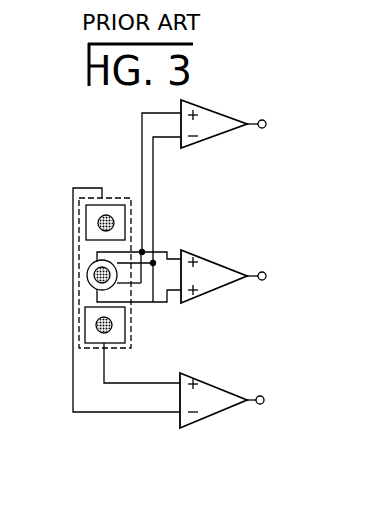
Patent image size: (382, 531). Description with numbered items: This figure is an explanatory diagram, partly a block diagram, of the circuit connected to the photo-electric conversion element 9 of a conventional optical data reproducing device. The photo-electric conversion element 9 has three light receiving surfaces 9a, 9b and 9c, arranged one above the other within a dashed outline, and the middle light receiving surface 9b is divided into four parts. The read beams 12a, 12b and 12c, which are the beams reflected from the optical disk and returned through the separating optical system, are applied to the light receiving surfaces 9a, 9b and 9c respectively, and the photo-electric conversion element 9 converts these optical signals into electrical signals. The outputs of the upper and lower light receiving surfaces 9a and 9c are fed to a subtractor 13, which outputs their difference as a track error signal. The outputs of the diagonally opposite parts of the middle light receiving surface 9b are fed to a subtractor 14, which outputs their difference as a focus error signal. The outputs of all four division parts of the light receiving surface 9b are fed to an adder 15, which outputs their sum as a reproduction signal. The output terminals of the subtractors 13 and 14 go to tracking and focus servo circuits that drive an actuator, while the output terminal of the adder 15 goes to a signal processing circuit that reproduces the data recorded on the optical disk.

The photo-electric conversion element 9 is at (121, 184).
The light receiving surface 9a is at (88, 222).
The middle light receiving surface 9b is at (88, 297).
The light receiving surface 9c is at (85, 322).
The read beam 12a is at (114, 222).
The read beam 12b is at (95, 270).
The read beam 12c is at (112, 326).
The subtractor 13 is at (207, 382).
The subtractor 14 is at (218, 139).
The adder 15 is at (213, 256).